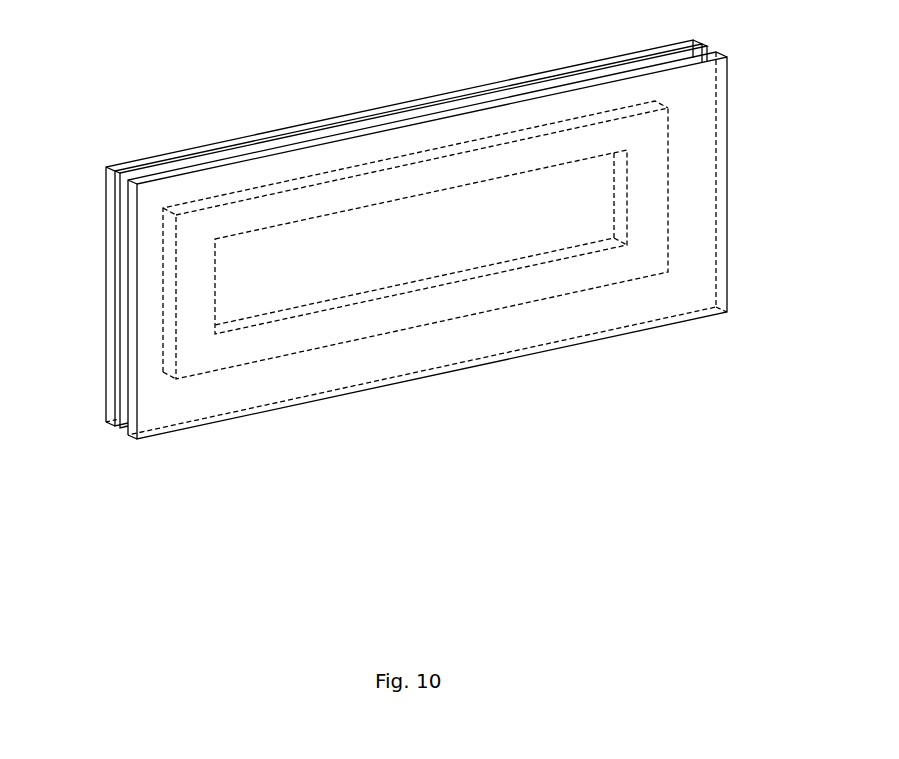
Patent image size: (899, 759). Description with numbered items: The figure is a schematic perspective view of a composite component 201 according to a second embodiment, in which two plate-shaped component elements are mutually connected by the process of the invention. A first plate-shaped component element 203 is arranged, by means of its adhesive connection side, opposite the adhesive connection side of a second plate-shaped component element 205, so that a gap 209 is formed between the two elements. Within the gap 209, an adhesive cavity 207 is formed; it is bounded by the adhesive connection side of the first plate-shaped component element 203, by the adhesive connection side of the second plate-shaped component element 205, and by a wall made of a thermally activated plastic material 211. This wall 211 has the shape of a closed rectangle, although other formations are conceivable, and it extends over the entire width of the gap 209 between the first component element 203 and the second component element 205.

The composite component 201 is at (349, 64).
The first plate-shaped component element 203 is at (106, 274).
The gap 209 is at (122, 322).
The second plate-shaped component element 205 is at (137, 373).
The wall made of thermally activated plastic material 211 is at (645, 192).
The adhesive cavity 207 is at (433, 240).